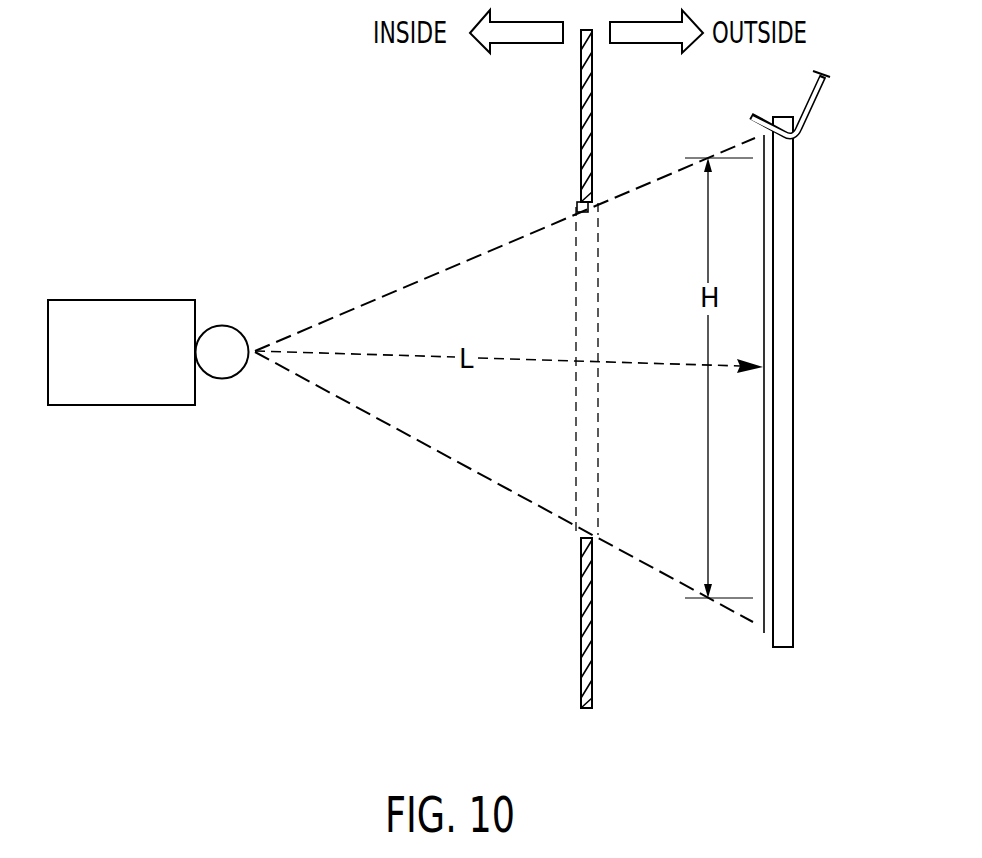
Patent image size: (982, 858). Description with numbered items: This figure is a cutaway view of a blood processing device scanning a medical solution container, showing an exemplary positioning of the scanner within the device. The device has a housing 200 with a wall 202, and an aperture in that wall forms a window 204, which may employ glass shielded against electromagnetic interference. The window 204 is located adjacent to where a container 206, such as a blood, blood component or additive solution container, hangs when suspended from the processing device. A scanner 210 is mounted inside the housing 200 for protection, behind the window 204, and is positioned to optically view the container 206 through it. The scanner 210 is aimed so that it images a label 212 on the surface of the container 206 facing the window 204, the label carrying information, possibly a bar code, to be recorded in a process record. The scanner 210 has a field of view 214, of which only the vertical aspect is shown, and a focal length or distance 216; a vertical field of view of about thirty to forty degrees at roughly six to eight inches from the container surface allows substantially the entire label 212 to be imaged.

The housing 200 is at (562, 128).
The wall 202 is at (592, 93).
The window 204 is at (584, 214).
The container 206 is at (783, 253).
The scanner 210 is at (123, 367).
The label 212 is at (763, 540).
The field of view 214 is at (353, 308).
The focal length 216 is at (437, 357).